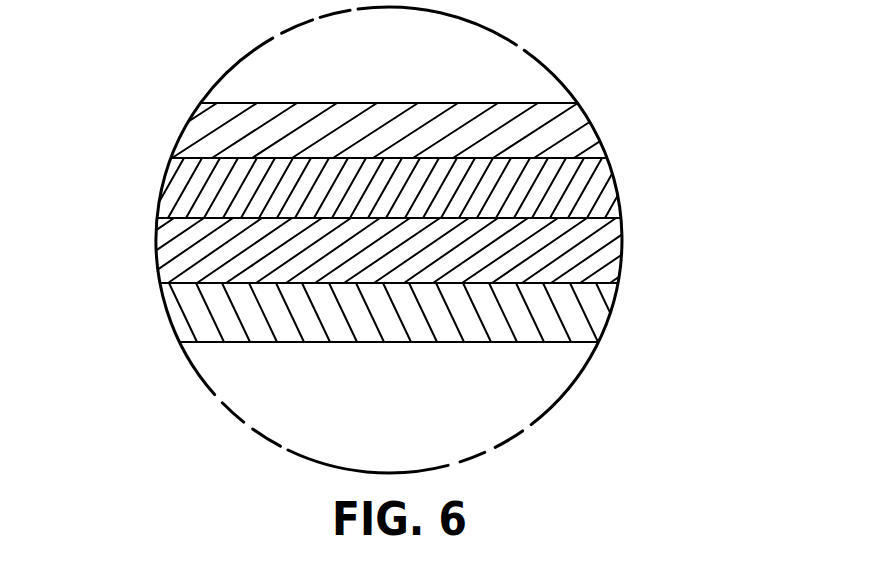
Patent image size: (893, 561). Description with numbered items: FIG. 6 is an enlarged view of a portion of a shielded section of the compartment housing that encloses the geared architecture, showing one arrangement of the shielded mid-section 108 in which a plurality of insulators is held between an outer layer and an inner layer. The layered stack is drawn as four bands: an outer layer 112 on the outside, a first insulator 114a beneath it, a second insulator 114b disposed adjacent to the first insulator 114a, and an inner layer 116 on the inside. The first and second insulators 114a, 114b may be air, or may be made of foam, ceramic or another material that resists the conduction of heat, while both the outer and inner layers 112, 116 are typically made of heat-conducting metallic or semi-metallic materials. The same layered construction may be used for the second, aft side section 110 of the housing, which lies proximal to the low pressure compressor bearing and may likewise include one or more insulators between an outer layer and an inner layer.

The shielded mid-section 108 is at (185, 95).
The second, aft side section 110 is at (342, 240).
The outer layer 112 is at (560, 133).
The first insulator 114a is at (552, 197).
The second insulator 114b is at (540, 258).
The inner layer 116 is at (528, 323).